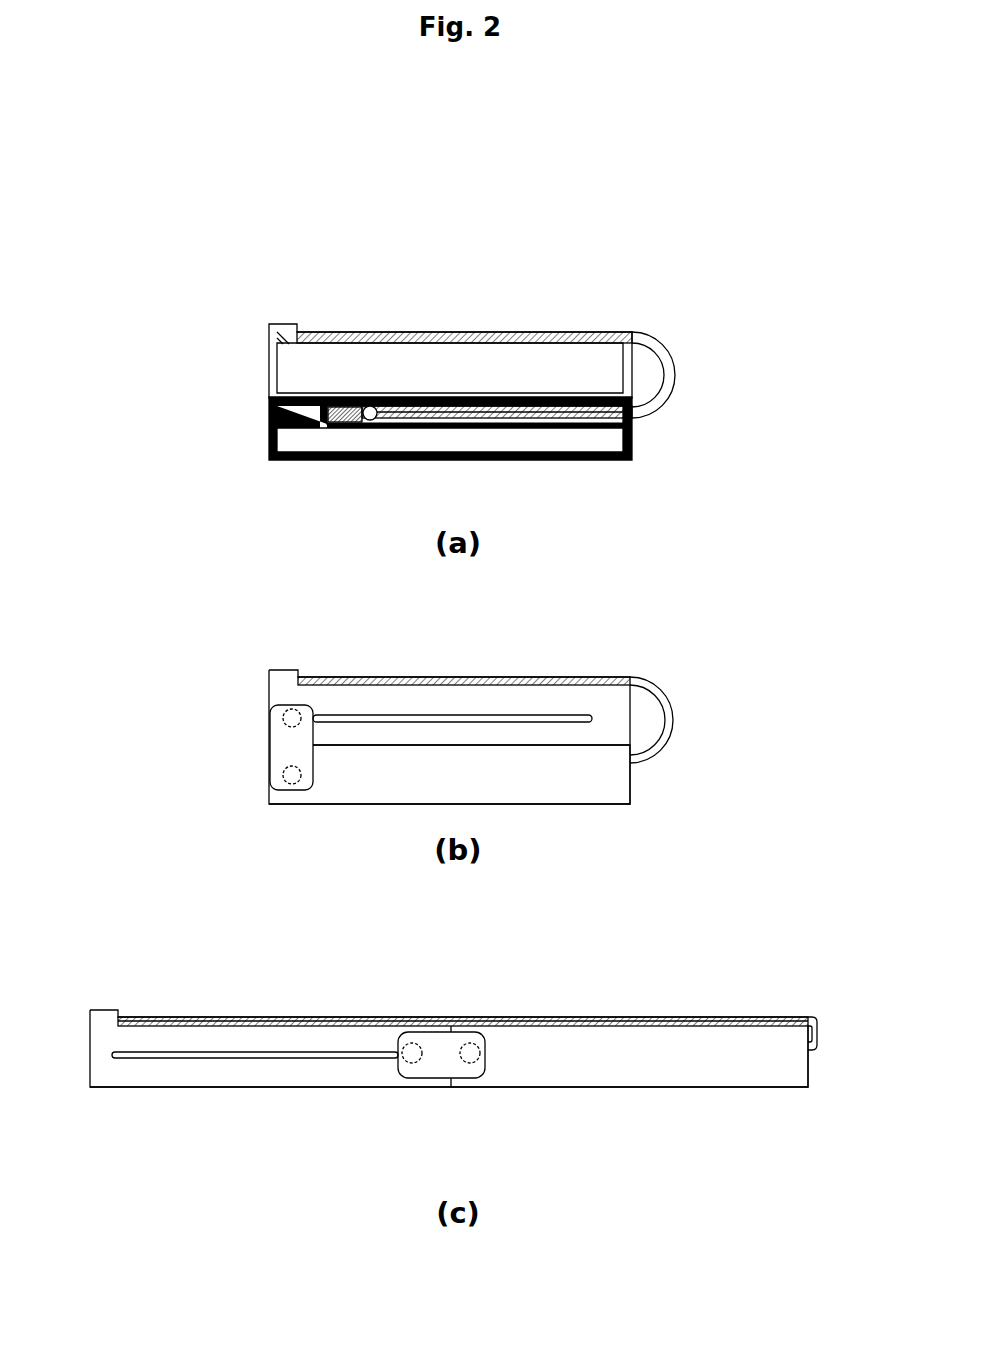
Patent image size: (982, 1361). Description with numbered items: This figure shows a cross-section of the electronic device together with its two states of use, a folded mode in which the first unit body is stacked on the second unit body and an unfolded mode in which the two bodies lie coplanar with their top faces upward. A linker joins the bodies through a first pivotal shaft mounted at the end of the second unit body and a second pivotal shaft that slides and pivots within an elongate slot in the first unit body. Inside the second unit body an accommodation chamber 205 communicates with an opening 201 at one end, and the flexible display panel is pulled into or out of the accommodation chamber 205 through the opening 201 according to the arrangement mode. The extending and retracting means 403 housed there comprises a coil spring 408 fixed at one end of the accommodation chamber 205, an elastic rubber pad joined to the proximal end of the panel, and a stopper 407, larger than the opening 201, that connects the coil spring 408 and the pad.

The opening 201 is at (633, 418).
The accommodation chamber 205 is at (568, 428).
The extending and retracting means 403 is at (310, 250).
The stopper 407 is at (372, 404).
The coil spring 408 is at (338, 393).